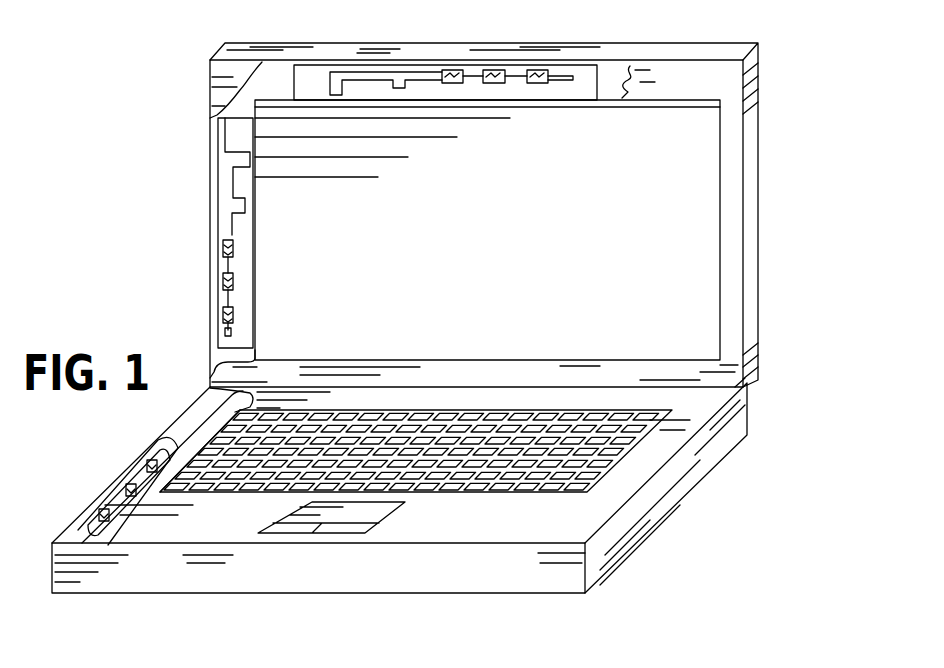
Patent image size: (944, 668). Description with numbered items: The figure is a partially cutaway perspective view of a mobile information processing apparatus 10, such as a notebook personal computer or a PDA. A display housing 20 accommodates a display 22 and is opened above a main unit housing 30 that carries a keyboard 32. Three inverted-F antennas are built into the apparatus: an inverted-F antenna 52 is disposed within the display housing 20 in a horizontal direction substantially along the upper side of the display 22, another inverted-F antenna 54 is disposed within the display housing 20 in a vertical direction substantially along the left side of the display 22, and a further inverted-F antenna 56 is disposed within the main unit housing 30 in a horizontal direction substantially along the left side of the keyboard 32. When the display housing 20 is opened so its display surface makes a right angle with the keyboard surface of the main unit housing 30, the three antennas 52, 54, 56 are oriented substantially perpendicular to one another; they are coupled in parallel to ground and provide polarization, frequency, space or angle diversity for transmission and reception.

The mobile information processing apparatus 10 is at (240, 33).
The display housing 20 is at (752, 222).
The display 22 is at (710, 315).
The main unit housing 30 is at (408, 575).
The keyboard 32 is at (627, 455).
The inverted-F antenna 52 is at (434, 76).
The inverted-F antenna 54 is at (228, 215).
The inverted-F antenna 56 is at (152, 450).